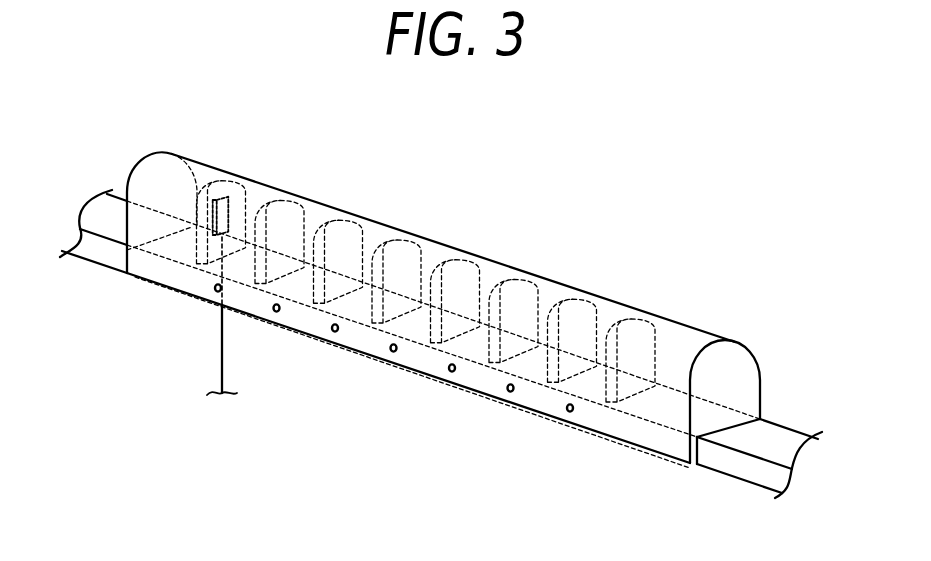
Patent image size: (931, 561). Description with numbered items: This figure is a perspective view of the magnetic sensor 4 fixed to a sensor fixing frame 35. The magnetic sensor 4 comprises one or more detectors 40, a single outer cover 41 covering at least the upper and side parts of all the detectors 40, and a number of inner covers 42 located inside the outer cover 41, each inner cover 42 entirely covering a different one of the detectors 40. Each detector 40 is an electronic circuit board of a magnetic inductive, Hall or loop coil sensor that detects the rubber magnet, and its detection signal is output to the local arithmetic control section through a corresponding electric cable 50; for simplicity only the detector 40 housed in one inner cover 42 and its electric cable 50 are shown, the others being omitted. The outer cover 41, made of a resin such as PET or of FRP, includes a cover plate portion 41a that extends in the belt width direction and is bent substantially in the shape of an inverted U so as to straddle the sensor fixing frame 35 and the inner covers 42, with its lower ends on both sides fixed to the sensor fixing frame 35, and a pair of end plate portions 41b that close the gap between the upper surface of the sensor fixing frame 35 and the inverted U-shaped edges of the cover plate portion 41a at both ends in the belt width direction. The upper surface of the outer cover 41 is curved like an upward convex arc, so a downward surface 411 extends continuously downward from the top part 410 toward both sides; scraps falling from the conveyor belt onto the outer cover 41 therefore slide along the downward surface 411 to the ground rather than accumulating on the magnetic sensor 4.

The magnetic sensor 4 is at (468, 230).
The outer cover 41 is at (393, 228).
The cover plate portion 41a is at (660, 314).
The end plate portions 41b is at (165, 188).
The top part 410 is at (547, 287).
The downward surface 411 is at (687, 360).
The inner cover 42 is at (208, 172).
The detector 40 is at (223, 217).
The sensor fixing frame 35 is at (745, 468).
The electric cable 50 is at (222, 349).